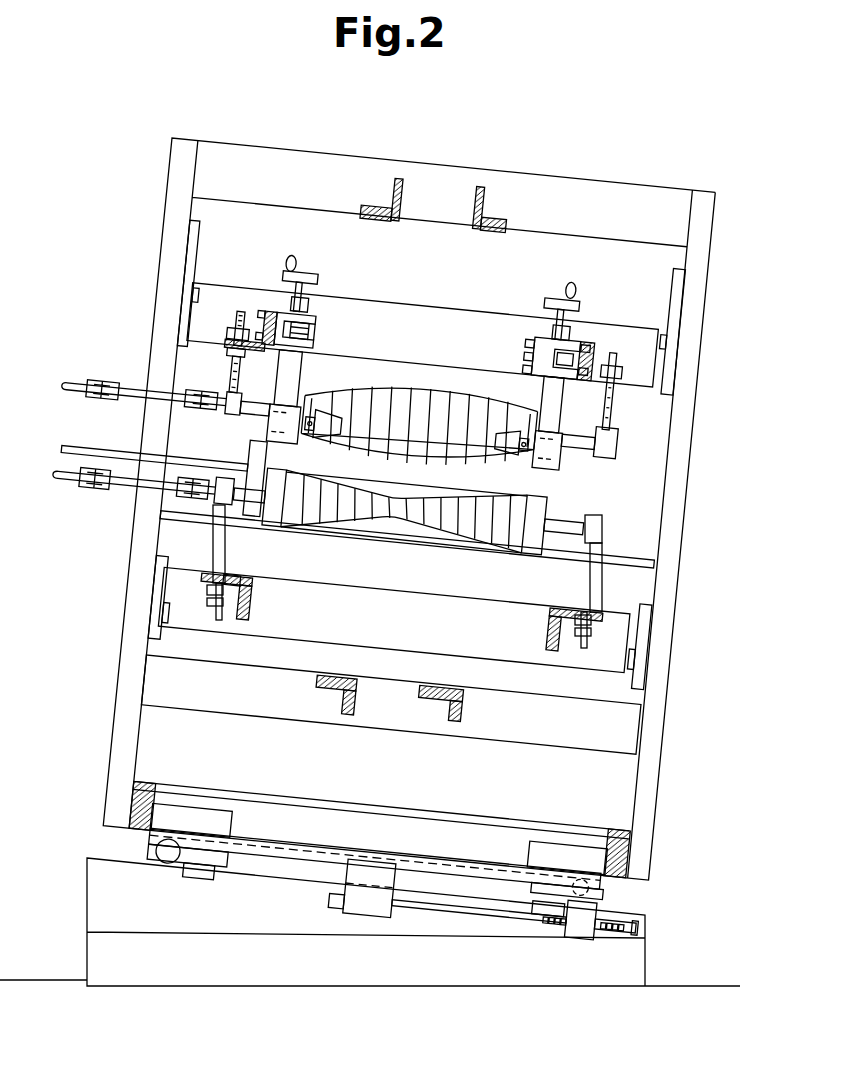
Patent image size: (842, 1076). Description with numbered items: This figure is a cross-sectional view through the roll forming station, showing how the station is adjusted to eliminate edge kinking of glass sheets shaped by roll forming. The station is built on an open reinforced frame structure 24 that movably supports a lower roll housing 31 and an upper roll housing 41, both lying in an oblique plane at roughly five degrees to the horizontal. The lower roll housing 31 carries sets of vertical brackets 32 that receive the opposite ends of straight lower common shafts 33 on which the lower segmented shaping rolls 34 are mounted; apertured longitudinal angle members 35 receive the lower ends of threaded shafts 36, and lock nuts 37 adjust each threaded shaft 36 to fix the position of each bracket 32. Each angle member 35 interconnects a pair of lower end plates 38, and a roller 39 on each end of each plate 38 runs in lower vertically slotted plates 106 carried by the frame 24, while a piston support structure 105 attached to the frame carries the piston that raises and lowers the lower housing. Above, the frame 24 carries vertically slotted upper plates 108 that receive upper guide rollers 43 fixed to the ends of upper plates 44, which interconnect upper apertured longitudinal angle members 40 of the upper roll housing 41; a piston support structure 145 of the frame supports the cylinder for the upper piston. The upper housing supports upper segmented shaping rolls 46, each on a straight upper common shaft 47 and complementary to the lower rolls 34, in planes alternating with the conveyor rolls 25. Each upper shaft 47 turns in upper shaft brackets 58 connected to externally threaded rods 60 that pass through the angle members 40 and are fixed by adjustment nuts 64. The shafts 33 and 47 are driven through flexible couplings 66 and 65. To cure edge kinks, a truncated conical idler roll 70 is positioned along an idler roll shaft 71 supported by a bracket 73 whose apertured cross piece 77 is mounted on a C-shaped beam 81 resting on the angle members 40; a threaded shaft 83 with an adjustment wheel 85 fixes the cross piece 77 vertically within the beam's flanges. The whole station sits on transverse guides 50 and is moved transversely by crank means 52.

The open reinforced frame structure 24 is at (170, 214).
The conveyor rolls 25 is at (432, 482).
The lower roll housing 31 is at (566, 672).
The vertical brackets 32 is at (600, 514).
The straight lower common shafts 33 is at (575, 530).
The lower segmented shaping rolls 34 is at (403, 514).
The apertured longitudinal angle members 35 is at (255, 601).
The threaded shafts 36 is at (222, 530).
The lock nuts 37 is at (240, 565).
The lower end plates 38 is at (414, 632).
The roller 39 is at (150, 621).
The upper apertured longitudinal angle members 40 is at (280, 318).
The upper roll housing 41 is at (643, 318).
The upper guide rollers 43 is at (185, 298).
The upper plates 44 is at (436, 350).
The upper segmented shaping rolls 46 is at (393, 396).
The straight upper common shaft 47 is at (272, 418).
The transverse guides 50 is at (140, 855).
The crank means 52 is at (616, 907).
The upper shaft brackets 58 is at (230, 418).
The externally threaded rods 60 is at (232, 376).
The adjustment nuts 64 is at (226, 333).
The flexible coupling 65 is at (150, 478).
The flexible coupling 66 is at (130, 388).
The idler roll 70 is at (330, 438).
The idler roll shaft 71 is at (488, 436).
The bracket 73 is at (292, 381).
The apertured cross piece 77 is at (538, 352).
The C-shaped beams 81 is at (540, 369).
The threaded shaft 83 is at (540, 338).
The adjustment wheel 85 is at (300, 270).
The piston support structure 105 is at (433, 702).
The lower vertically slotted plates 106 is at (160, 553).
The upper plates 108 is at (188, 255).
The piston support structure 145 is at (396, 192).